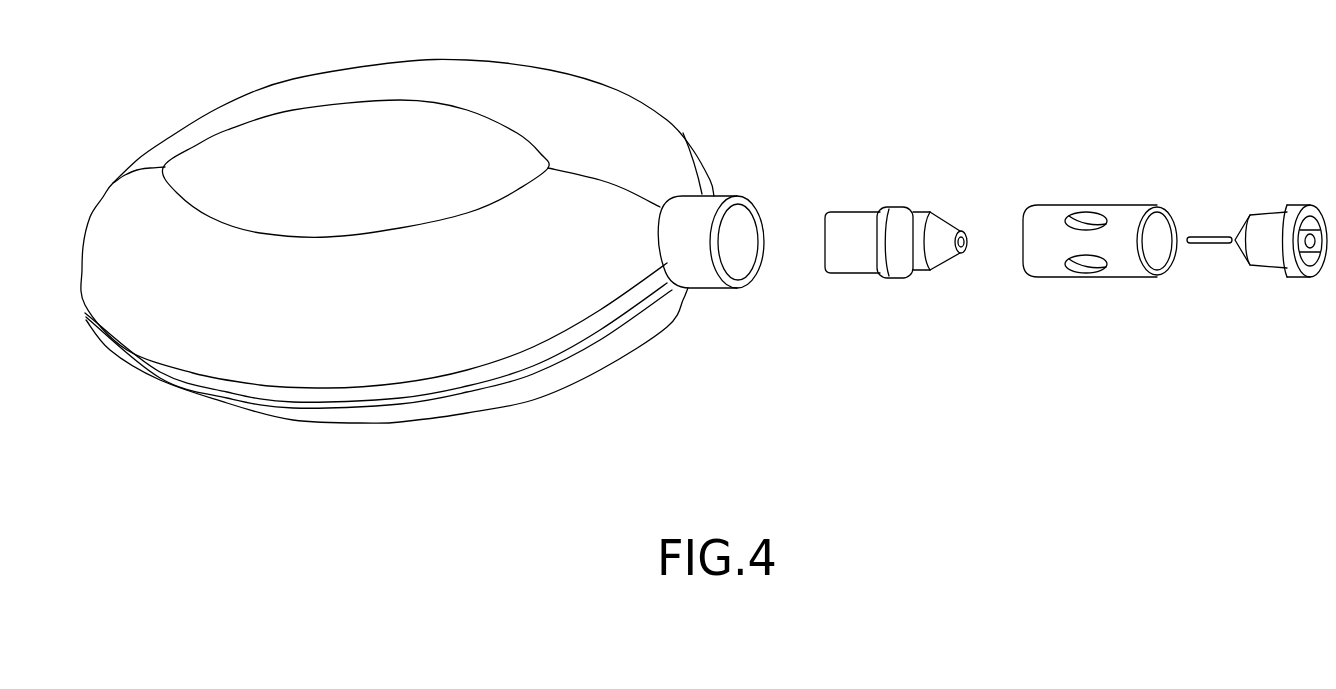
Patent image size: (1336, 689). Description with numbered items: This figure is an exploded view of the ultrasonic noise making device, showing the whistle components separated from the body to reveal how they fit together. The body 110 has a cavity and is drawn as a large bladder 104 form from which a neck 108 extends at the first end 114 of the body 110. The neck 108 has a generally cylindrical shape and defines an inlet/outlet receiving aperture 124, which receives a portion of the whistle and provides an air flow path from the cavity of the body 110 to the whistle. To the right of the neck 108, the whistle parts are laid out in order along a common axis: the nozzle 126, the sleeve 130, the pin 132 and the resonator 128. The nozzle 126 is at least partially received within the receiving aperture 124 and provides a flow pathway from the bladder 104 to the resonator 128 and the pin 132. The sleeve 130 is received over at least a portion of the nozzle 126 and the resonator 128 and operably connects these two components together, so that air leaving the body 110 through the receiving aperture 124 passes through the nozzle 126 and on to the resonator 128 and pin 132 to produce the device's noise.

The bladder 104 is at (553, 66).
The body 110 is at (385, 368).
The neck 108 is at (707, 277).
The first end 114 is at (748, 287).
The inlet/outlet receiving aperture 124 is at (752, 242).
The nozzle 126 is at (902, 200).
The sleeve 130 is at (1118, 205).
The resonator 128 is at (1280, 212).
The pin 132 is at (1210, 245).